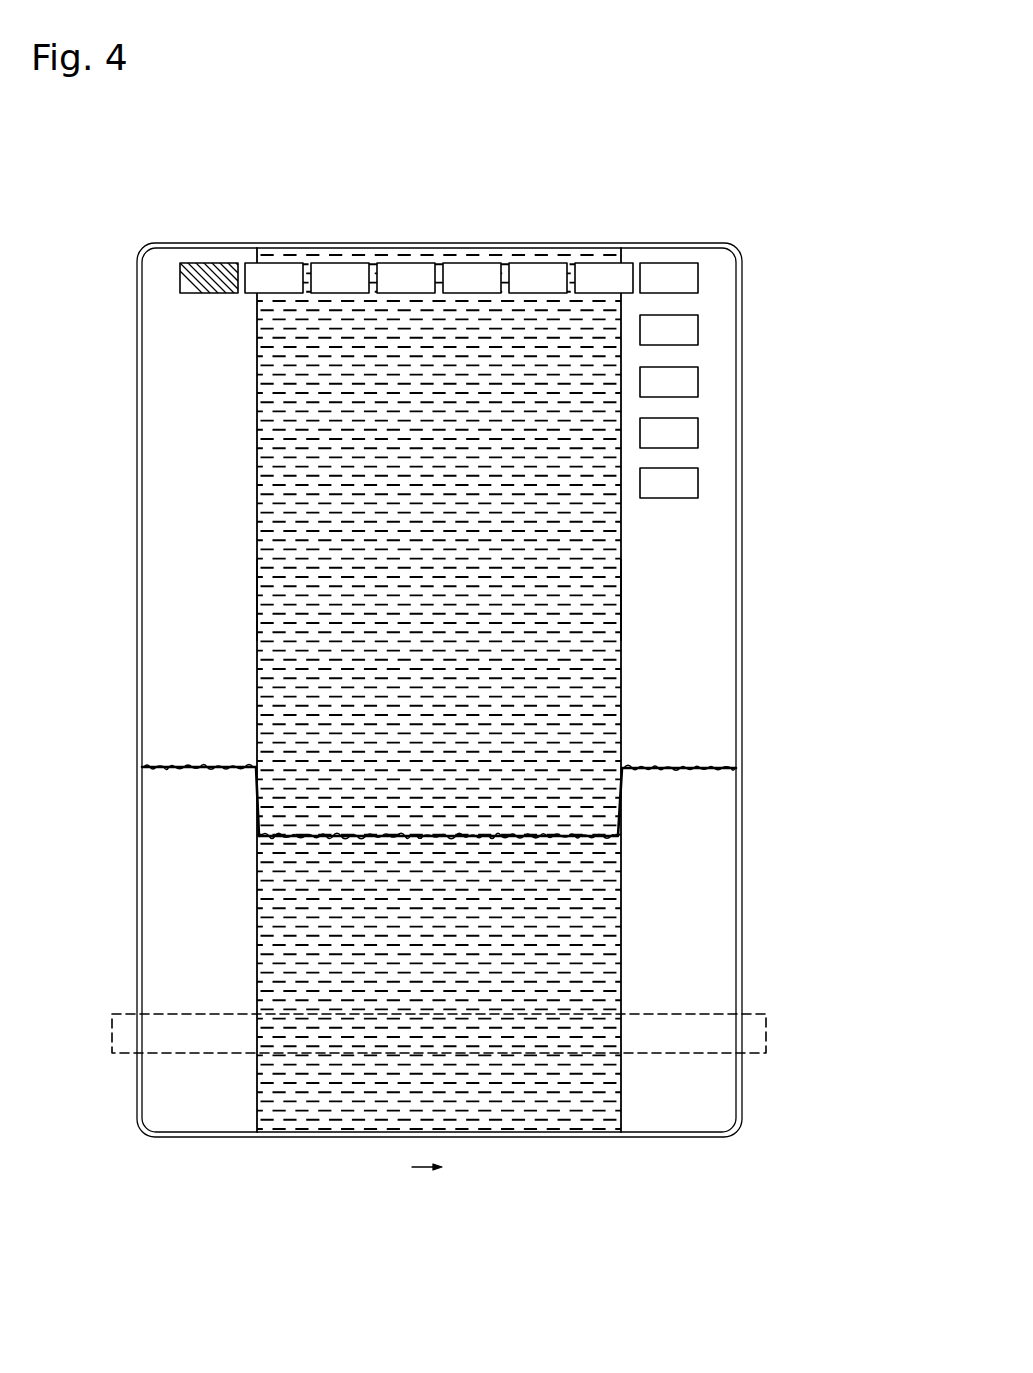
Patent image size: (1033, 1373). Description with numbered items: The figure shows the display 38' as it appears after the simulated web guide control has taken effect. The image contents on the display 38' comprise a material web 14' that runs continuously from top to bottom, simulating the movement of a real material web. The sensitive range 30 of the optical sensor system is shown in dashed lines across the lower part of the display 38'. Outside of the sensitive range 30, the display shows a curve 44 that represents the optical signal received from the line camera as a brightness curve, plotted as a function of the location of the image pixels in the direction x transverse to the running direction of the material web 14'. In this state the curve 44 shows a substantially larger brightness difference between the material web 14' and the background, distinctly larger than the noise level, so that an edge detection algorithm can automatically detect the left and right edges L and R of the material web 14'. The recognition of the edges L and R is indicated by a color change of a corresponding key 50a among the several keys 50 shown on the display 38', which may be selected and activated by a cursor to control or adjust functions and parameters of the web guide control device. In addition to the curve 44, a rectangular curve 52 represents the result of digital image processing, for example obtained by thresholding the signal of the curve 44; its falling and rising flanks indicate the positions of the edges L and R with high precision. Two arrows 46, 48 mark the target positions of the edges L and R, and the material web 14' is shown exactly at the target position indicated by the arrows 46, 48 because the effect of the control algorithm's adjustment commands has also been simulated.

The display 38' is at (439, 619).
The key 50a is at (203, 274).
The keys 50 is at (668, 278).
The material web 14' is at (392, 692).
The arrow 46 is at (250, 690).
The arrow 48 is at (628, 690).
The left edge L is at (256, 603).
The right edge R is at (622, 602).
The rectangular curve 52 is at (190, 770).
The curve 44 is at (638, 773).
The sensitive range 30 is at (767, 1033).
The direction x is at (427, 1187).